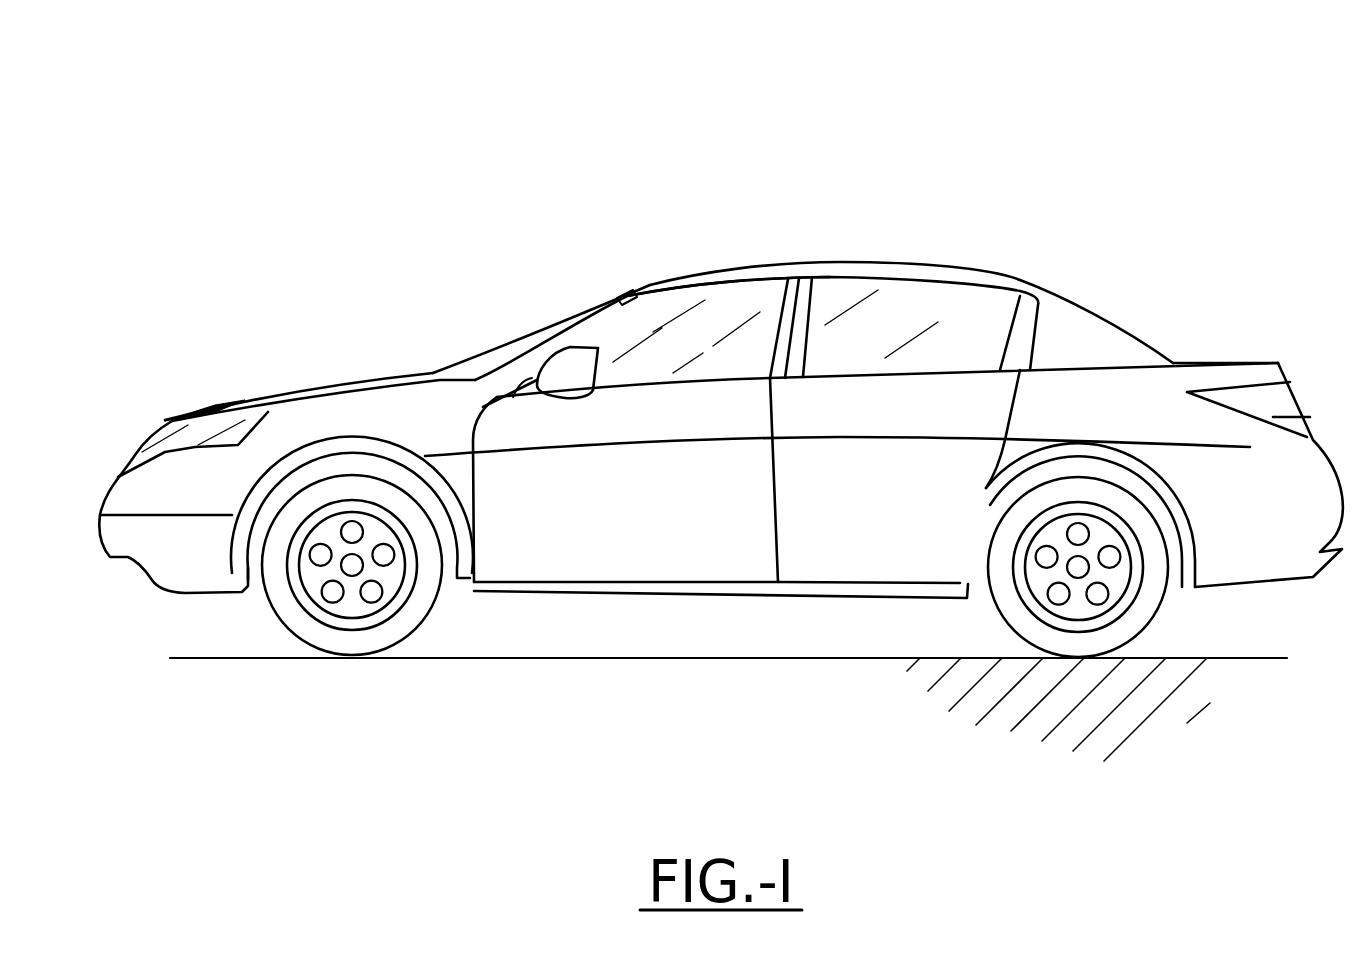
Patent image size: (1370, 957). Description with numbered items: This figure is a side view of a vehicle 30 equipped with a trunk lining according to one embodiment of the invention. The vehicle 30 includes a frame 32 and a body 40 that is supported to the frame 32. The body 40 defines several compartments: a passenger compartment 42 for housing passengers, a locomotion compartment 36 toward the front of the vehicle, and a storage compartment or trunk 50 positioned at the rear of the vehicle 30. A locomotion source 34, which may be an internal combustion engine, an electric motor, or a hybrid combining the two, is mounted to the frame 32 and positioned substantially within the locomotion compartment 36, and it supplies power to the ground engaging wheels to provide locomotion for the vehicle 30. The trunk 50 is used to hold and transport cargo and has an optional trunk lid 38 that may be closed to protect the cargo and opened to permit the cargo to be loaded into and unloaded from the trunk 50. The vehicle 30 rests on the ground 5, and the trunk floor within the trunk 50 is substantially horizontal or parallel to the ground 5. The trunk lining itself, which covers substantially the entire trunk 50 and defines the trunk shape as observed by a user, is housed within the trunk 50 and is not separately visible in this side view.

The vehicle 30 is at (1013, 190).
The frame 32 is at (717, 605).
The locomotion source 34 is at (173, 337).
The locomotion compartment 36 is at (250, 340).
The trunk lid 38 is at (1252, 357).
The body 40 is at (498, 300).
The passenger compartment 42 is at (725, 303).
The trunk 50 is at (1237, 260).
The ground 5 is at (1218, 660).